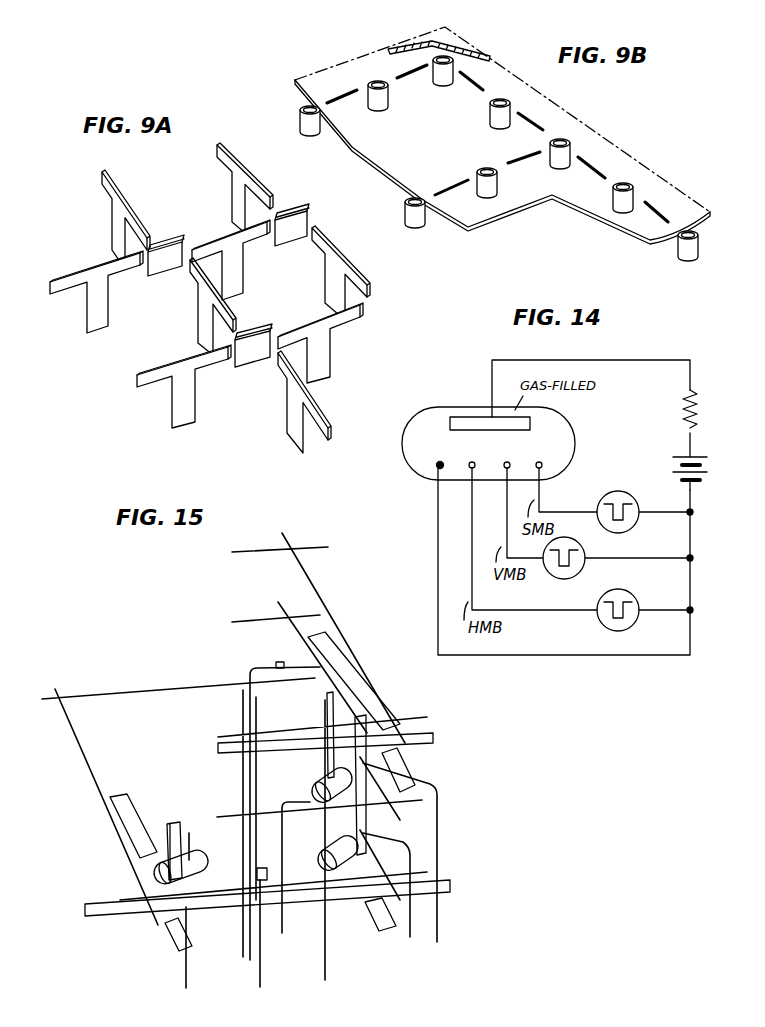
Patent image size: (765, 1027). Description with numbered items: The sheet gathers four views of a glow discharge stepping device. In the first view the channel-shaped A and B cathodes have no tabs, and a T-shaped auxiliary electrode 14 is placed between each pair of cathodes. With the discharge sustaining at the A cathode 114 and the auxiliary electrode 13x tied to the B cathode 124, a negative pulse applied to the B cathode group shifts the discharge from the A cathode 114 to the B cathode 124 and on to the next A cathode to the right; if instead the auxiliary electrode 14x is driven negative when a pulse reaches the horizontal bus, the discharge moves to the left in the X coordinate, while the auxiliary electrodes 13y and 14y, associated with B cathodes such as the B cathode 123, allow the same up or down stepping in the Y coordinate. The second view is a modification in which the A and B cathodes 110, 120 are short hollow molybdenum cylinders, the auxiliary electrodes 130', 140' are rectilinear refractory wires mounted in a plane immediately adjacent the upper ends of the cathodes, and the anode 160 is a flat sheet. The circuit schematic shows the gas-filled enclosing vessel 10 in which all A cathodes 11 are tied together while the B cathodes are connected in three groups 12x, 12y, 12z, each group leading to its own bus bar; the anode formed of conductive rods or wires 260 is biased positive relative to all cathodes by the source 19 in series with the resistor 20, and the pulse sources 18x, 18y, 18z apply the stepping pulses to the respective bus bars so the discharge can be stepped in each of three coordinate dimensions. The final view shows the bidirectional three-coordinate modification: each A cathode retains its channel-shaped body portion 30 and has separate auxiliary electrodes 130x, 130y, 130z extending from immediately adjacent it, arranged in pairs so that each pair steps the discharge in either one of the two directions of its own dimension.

In FIG. 14, the enclosing vessel 10 is at (440, 415).
In FIG. 14, the cold cathodes (A cathodes) 11 is at (440, 460).
In FIG. 14, the B cathode group (X direction) 12x is at (471, 462).
In FIG. 14, the B cathode group (Y direction) 12y is at (506, 462).
In FIG. 14, the B cathode group (Z direction) 12z is at (540, 462).
In FIG. 14, the conductive rods or wires 260 is at (530, 425).
In FIG. 14, the resistor 20 is at (677, 410).
In FIG. 14, the source 19 is at (673, 461).
In FIG. 14, the pulse source 18x is at (623, 627).
In FIG. 14, the pulse source 18y is at (585, 570).
In FIG. 14, the pulse source 18z is at (637, 525).
In FIG. 9A, the auxiliary electrode 13x is at (248, 238).
In FIG. 9A, the auxiliary electrode 13y is at (122, 194).
In FIG. 9A, the T-shaped auxiliary electrode 14 is at (137, 383).
In FIG. 9A, the auxiliary electrode 14x is at (73, 272).
In FIG. 9A, the auxiliary electrode 14y is at (205, 302).
In FIG. 9A, the A cathode 114 is at (168, 246).
In FIG. 9A, the B cathode 123 is at (252, 363).
In FIG. 9A, the B cathode 124 is at (293, 244).
In FIG. 9B, the A cathodes 110 is at (301, 121).
In FIG. 9B, the B cathodes 120 is at (378, 105).
In FIG. 9B, the auxiliary electrode 130' is at (497, 143).
In FIG. 9B, the auxiliary electrode 140' is at (567, 116).
In FIG. 9B, the anode 160 is at (673, 190).
In FIG. 15, the auxiliary electrode 130x is at (218, 744).
In FIG. 15, the auxiliary electrode 130y is at (332, 658).
In FIG. 15, the auxiliary electrode 130z is at (173, 827).
In FIG. 15, the channel-shaped body portion 30 is at (352, 700).